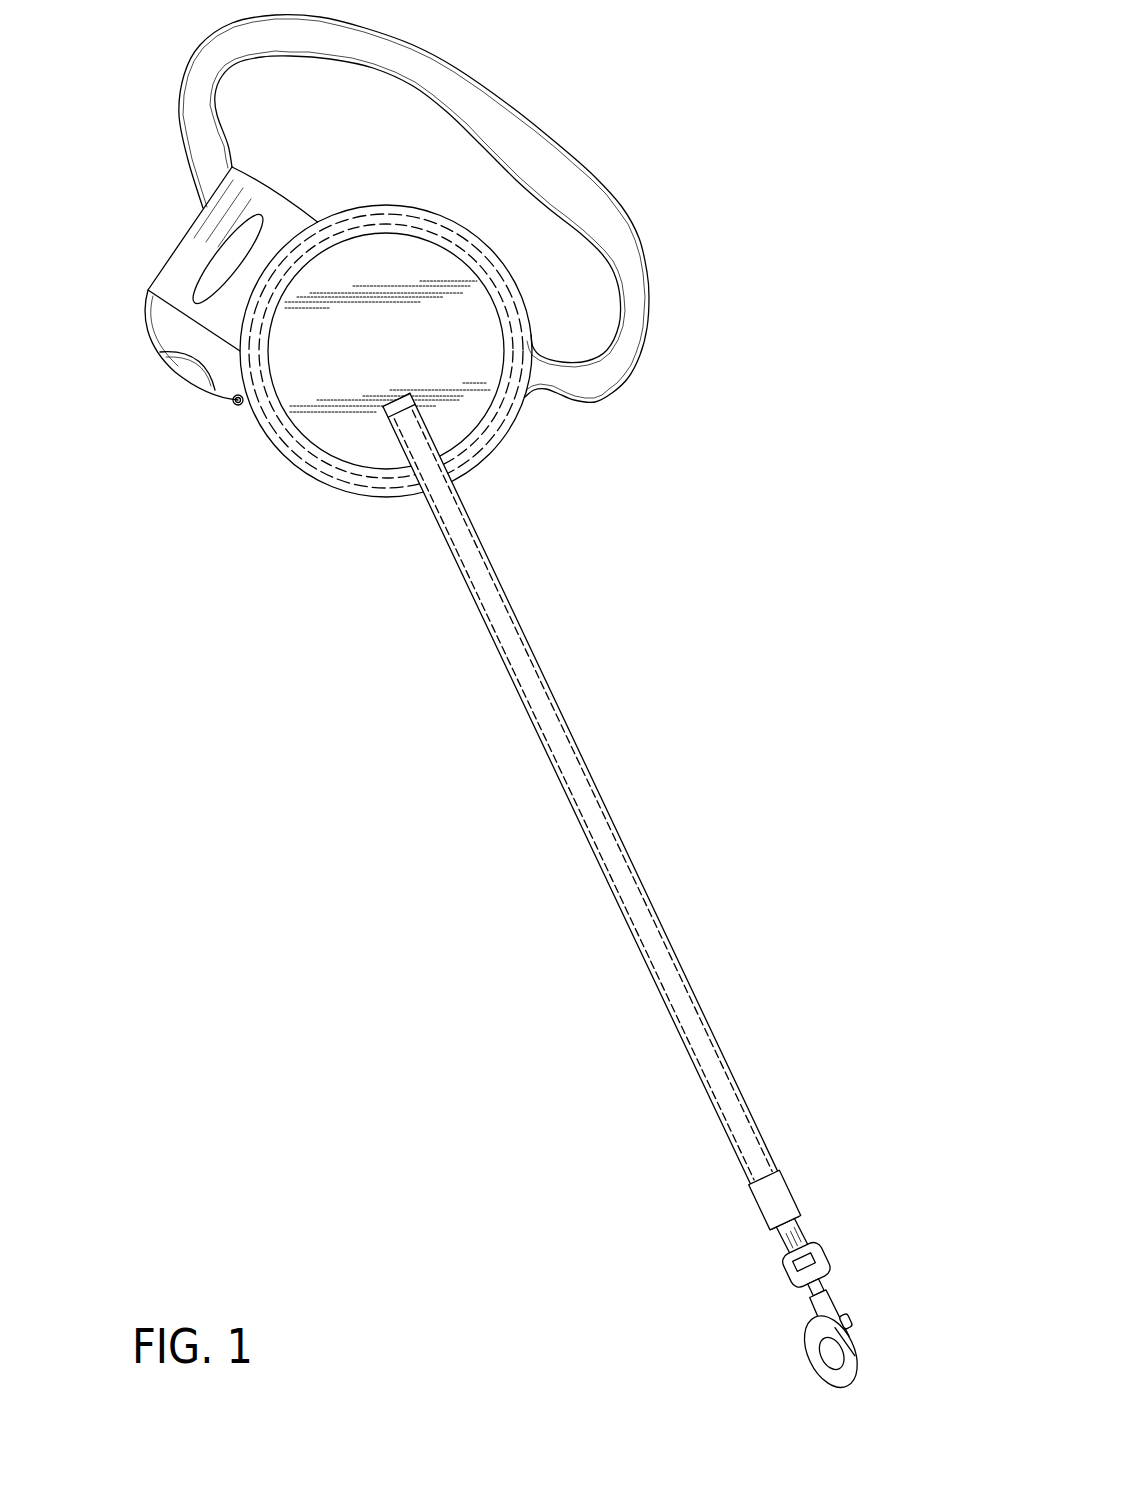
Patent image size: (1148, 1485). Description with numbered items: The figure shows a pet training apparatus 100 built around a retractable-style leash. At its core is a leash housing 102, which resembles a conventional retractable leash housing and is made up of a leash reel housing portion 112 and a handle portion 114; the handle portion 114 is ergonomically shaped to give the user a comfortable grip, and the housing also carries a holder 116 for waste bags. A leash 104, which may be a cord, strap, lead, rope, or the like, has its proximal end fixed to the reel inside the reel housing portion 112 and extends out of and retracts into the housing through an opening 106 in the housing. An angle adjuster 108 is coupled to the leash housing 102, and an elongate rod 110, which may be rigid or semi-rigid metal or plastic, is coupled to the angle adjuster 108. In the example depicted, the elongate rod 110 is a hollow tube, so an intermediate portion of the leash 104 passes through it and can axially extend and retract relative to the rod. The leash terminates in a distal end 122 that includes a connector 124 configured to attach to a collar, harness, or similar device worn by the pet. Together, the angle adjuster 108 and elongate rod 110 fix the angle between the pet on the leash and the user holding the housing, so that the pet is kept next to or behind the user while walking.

The pet training apparatus 100 is at (812, 229).
The leash housing 102 is at (163, 141).
The leash 104 is at (790, 1178).
The opening 106 is at (380, 411).
The angle adjuster 108 is at (458, 410).
The elongate rod 110 is at (620, 835).
The leash reel housing portion 112 is at (258, 427).
The handle portion 114 is at (574, 158).
The holder 116 is at (175, 316).
The distal end 122 is at (797, 1228).
The connector 124 is at (828, 1305).